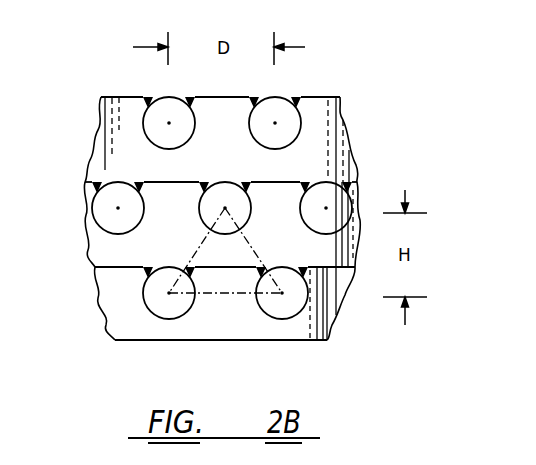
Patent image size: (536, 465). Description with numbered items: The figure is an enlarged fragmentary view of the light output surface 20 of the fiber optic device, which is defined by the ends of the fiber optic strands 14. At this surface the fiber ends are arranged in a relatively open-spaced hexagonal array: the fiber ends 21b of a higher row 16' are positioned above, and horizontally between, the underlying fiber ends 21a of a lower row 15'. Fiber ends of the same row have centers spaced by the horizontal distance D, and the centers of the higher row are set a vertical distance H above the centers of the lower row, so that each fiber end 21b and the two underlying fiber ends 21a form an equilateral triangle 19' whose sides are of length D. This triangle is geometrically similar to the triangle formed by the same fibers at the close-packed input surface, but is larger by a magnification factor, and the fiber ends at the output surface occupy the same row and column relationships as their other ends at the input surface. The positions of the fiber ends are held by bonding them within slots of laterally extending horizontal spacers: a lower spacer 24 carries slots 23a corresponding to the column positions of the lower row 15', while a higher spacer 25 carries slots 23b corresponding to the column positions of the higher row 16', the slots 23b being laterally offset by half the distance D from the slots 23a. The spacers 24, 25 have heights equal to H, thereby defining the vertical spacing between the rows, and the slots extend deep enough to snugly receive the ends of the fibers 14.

The light output surface 20 is at (370, 132).
The fiber optic strands 14 is at (332, 188).
The fiber ends of higher row 21b is at (198, 203).
The slots of higher spacer 23b is at (214, 183).
The higher row 16' is at (191, 224).
The equilateral triangle 19' is at (164, 250).
The slots of lower spacer 23a is at (144, 268).
The lower row 15' is at (196, 303).
The fiber ends of lower row 21a is at (156, 304).
The lower spacer 24 is at (272, 325).
The higher spacer 25 is at (316, 245).